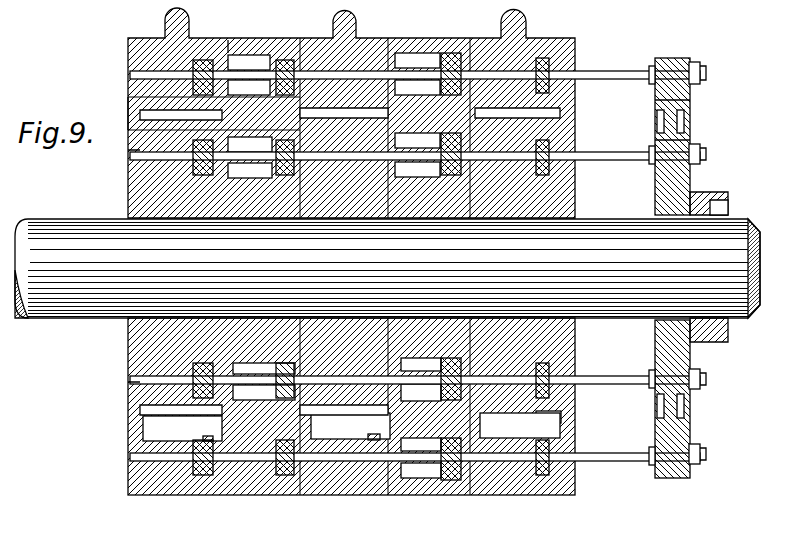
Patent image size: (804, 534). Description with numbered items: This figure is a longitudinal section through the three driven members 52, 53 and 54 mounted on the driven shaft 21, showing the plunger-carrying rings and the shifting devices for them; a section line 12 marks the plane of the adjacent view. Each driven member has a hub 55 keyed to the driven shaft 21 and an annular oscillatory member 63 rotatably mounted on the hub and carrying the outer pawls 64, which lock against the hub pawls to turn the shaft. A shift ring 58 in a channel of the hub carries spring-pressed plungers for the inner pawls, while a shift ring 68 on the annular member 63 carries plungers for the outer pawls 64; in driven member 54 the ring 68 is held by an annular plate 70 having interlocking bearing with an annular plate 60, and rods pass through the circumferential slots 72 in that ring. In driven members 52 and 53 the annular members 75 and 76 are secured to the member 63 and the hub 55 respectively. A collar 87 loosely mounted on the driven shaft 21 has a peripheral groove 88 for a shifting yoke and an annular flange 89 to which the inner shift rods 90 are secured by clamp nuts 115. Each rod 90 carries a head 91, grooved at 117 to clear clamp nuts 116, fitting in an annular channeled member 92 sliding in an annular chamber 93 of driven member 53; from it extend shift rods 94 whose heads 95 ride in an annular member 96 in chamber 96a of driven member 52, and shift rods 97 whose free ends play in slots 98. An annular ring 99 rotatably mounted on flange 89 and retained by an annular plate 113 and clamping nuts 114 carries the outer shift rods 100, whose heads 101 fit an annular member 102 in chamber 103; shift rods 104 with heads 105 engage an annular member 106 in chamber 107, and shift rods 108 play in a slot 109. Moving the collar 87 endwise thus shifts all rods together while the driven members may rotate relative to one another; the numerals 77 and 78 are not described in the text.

The section line 12 is at (94, 86).
The driven shaft 21 is at (752, 225).
The driven member 52 is at (300, 507).
The driven member 53 is at (440, 506).
The driven member 54 is at (487, 505).
The hub 55 is at (577, 192).
The shift ring 58 is at (577, 176).
The annular plate 60 is at (577, 136).
The annular oscillatory member 63 is at (145, 40).
The outer pawls 64 is at (160, 431).
The shift ring 68 is at (203, 58).
The annular plate 70 is at (577, 53).
The slots 72 is at (540, 432).
The annular member 75 is at (334, 88).
The annular member 76 is at (240, 418).
The lug 77 is at (170, 14).
The lug 78 is at (352, 26).
The collar 87 is at (730, 196).
The peripheral groove 88 is at (720, 200).
The annular flange 89 is at (688, 140).
The shift rods 90 is at (632, 152).
The head 91 is at (453, 356).
The annular channeled member 92 is at (440, 170).
The annular chamber 93 is at (418, 267).
The shift rods 94 is at (340, 356).
The heads 95 is at (280, 368).
The annular member 96 is at (270, 144).
The annular chamber 96a is at (270, 190).
The shift rods 97 is at (230, 185).
The slots 98 is at (130, 158).
The annular ring 99 is at (670, 60).
The shift rods 100 is at (633, 70).
The head 101 is at (456, 52).
The annular member 102 is at (444, 52).
The annular chamber 103 is at (405, 53).
The shift rods 104 is at (324, 38).
The head 105 is at (296, 38).
The annular member 106 is at (280, 38).
The annular chamber 107 is at (249, 62).
The shift rods 108 is at (230, 42).
The slot 109 is at (137, 86).
The annular plate 113 is at (690, 100).
The clamping nuts 114 is at (698, 64).
The clamp nuts 115 is at (700, 158).
The clamp nuts 116 is at (421, 445).
The circumferential groove 117 is at (440, 362).